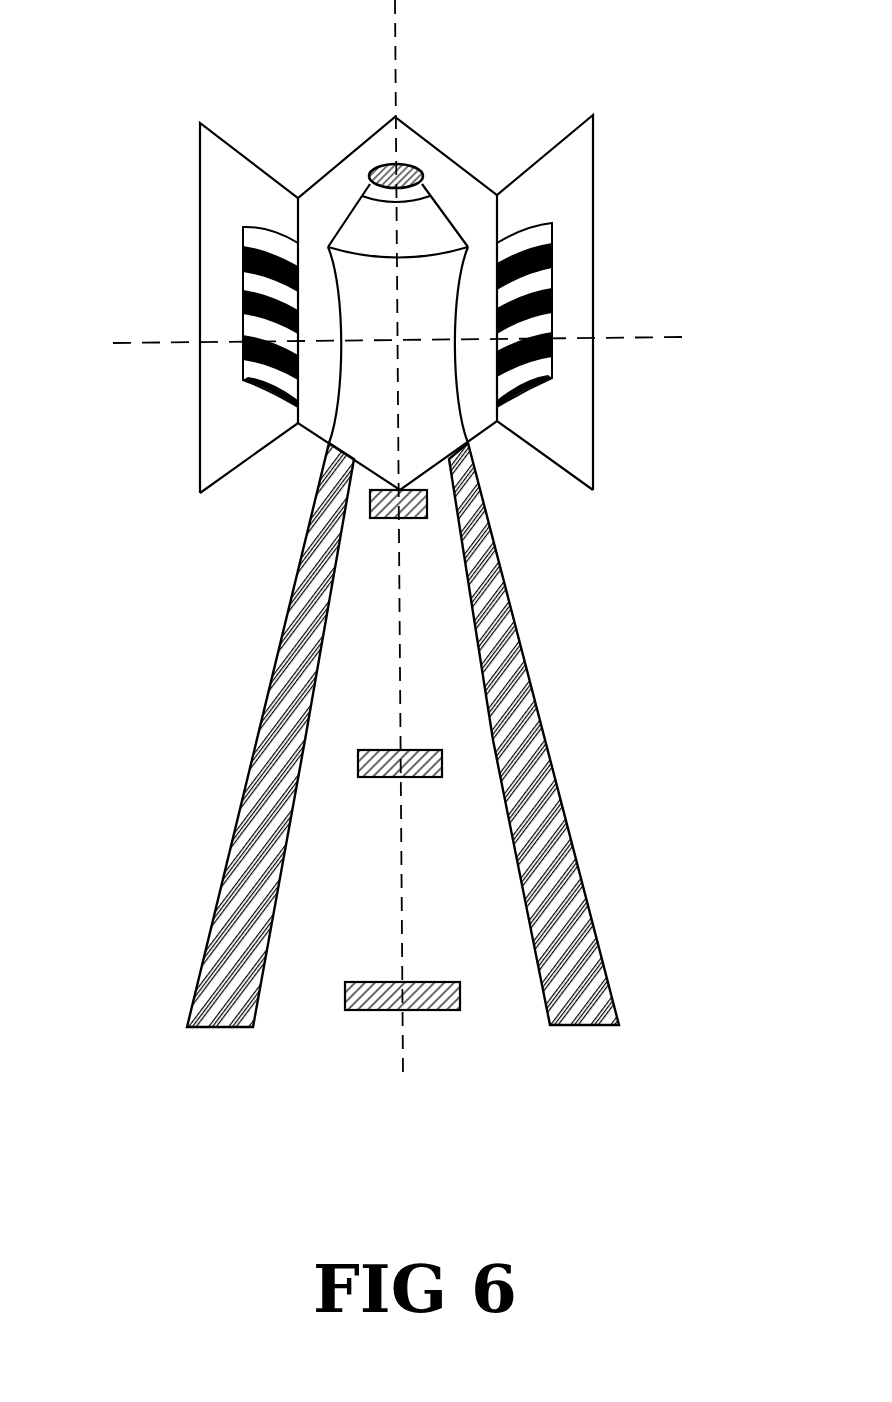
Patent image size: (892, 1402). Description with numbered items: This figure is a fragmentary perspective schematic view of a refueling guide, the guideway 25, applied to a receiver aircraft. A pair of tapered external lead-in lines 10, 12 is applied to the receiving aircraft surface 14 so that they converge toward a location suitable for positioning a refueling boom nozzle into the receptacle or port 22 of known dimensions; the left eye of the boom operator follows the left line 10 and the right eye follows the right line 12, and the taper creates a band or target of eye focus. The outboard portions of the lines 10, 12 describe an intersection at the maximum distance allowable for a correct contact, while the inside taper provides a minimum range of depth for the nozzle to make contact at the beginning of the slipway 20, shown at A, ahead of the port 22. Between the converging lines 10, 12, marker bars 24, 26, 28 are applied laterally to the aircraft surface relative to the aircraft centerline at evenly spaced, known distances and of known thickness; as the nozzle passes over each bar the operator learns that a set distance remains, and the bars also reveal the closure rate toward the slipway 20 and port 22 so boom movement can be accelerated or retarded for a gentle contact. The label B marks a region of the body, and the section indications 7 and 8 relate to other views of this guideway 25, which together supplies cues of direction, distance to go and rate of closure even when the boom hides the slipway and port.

The section line 7- 7 is at (457, 18).
The aircraft surface 8 is at (133, 390).
The tapered lead-in line 10 is at (230, 863).
The tapered lead-in line 12 is at (575, 877).
The receiving aircraft surface 14 is at (368, 863).
The slipway 20 is at (450, 415).
The receptacle or port 22 is at (375, 165).
The marker bar 24 is at (427, 982).
The guideway 25 is at (198, 650).
The marker bar 26 is at (390, 750).
The marker bar 28 is at (427, 518).
The beginning of the slipway A is at (403, 490).
The curved surface B is at (408, 248).